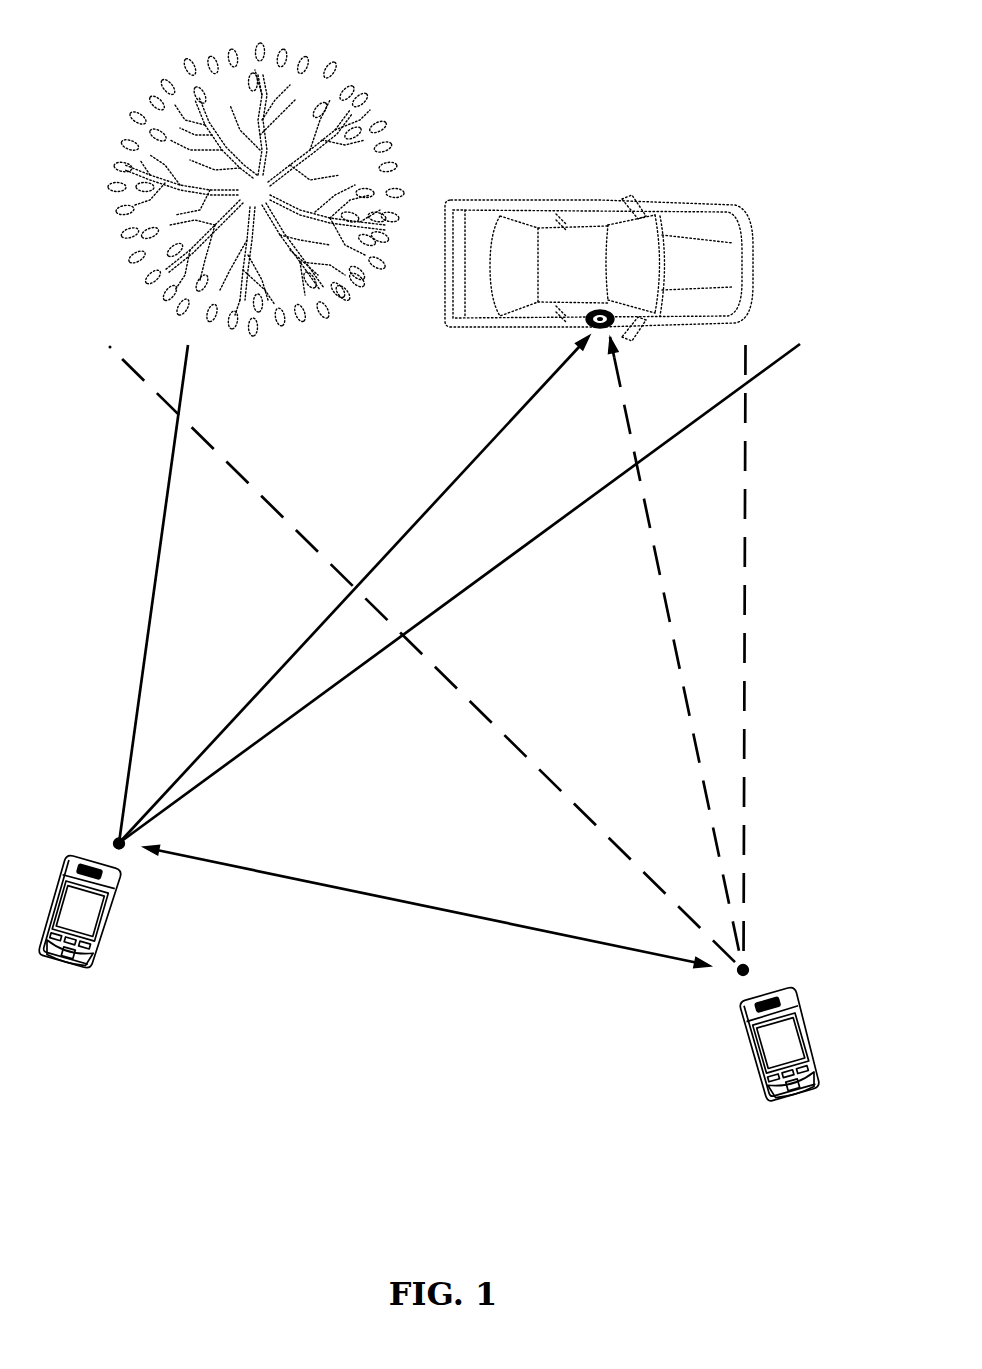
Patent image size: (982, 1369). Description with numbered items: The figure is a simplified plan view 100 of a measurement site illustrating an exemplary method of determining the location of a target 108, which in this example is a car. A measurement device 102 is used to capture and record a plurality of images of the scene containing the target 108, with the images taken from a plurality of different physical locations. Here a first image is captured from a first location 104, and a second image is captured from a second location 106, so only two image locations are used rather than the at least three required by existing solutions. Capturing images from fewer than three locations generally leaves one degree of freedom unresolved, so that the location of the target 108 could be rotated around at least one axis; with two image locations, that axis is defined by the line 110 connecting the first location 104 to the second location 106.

The simplified plan view 100 is at (602, 66).
The measurement device 102 is at (70, 977).
The first location 104 is at (110, 838).
The second location 106 is at (752, 965).
The target 108 is at (662, 203).
The line 110 is at (423, 903).